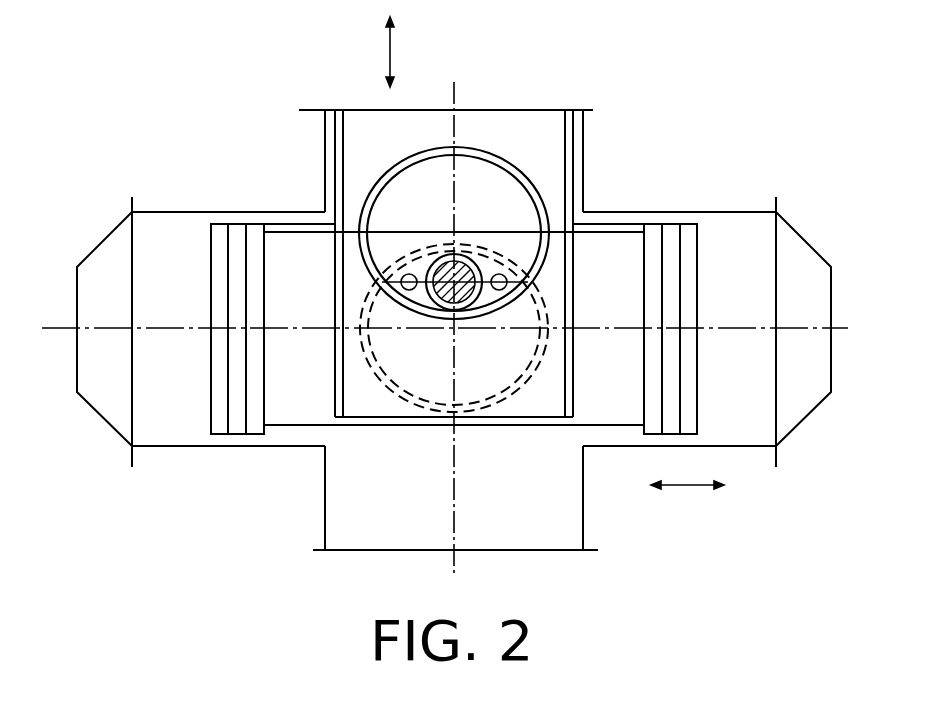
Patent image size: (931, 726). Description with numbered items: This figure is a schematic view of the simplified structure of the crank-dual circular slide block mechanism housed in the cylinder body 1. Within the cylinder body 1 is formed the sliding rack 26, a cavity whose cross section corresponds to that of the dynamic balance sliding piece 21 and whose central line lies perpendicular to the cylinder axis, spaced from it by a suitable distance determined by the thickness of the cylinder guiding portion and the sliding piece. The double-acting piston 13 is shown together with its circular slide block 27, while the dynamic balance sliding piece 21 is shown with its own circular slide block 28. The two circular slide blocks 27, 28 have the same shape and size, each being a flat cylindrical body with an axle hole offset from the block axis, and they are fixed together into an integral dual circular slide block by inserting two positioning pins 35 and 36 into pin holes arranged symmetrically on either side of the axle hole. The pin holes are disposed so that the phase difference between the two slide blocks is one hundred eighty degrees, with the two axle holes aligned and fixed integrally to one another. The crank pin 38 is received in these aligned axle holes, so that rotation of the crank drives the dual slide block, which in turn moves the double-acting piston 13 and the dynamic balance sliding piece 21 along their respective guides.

The cylinder body 1 is at (173, 436).
The double-acting piston 13 is at (290, 409).
The dynamic balance sliding piece 21 is at (353, 153).
The sliding rack 26 is at (563, 518).
The circular slide block 27 is at (543, 363).
The circular slide block 28 is at (528, 186).
The positioning pin 35 is at (408, 273).
The positioning pin 36 is at (500, 273).
The crank pin 38 is at (450, 255).